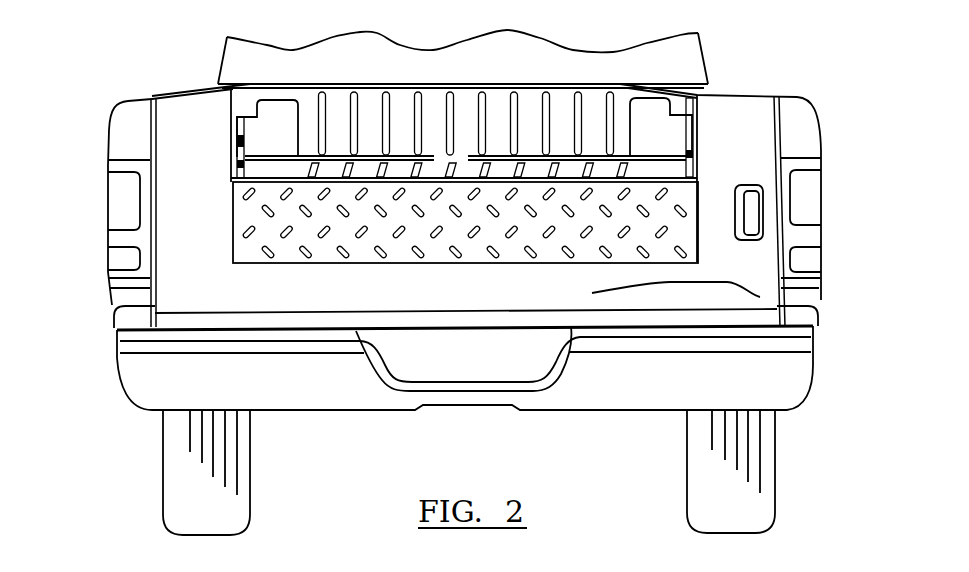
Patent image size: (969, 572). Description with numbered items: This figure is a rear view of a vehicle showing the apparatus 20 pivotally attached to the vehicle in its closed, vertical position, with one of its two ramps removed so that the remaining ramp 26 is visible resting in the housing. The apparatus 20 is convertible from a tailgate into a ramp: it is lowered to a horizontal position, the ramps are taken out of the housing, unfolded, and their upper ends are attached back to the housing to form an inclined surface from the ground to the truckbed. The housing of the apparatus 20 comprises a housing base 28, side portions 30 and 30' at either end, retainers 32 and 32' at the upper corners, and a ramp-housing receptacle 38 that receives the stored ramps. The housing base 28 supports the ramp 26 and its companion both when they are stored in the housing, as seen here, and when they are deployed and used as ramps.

The apparatus 20 is at (168, 297).
The ramp 26 is at (248, 218).
The housing base 28 is at (760, 297).
The side portion 30 is at (147, 206).
The side portion 30' is at (756, 205).
The retainer 32 is at (218, 102).
The retainer 32' is at (715, 103).
The ramp-housing receptacle 38 is at (464, 135).